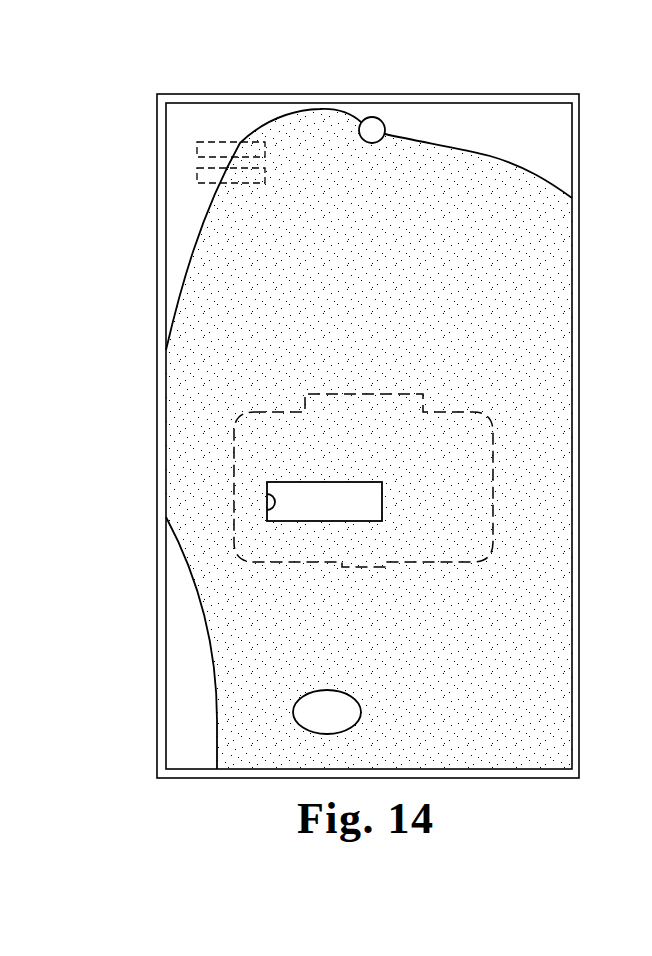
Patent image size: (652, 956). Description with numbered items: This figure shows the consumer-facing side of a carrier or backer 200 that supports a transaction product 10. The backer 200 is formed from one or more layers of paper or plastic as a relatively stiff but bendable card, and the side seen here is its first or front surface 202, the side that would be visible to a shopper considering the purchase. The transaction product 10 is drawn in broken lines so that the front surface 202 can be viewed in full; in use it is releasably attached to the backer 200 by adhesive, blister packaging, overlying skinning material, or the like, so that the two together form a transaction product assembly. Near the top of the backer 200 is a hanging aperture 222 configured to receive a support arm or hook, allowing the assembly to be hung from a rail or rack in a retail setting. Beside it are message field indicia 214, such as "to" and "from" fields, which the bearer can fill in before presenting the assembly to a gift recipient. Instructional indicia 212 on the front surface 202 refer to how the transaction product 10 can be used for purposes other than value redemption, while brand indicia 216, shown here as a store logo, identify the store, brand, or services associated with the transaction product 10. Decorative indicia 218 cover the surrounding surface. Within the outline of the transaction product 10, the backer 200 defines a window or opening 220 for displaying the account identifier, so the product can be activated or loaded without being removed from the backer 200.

The transaction product 10 is at (493, 487).
The backer 200 is at (477, 87).
The front surface 202 is at (197, 148).
The instructional indicia 212 is at (197, 175).
The message field indicia 214 is at (458, 142).
The brand indicia 216 is at (290, 710).
The decorative indicia 218 is at (533, 632).
The opening 220 is at (266, 509).
The hanging aperture 222 is at (362, 127).